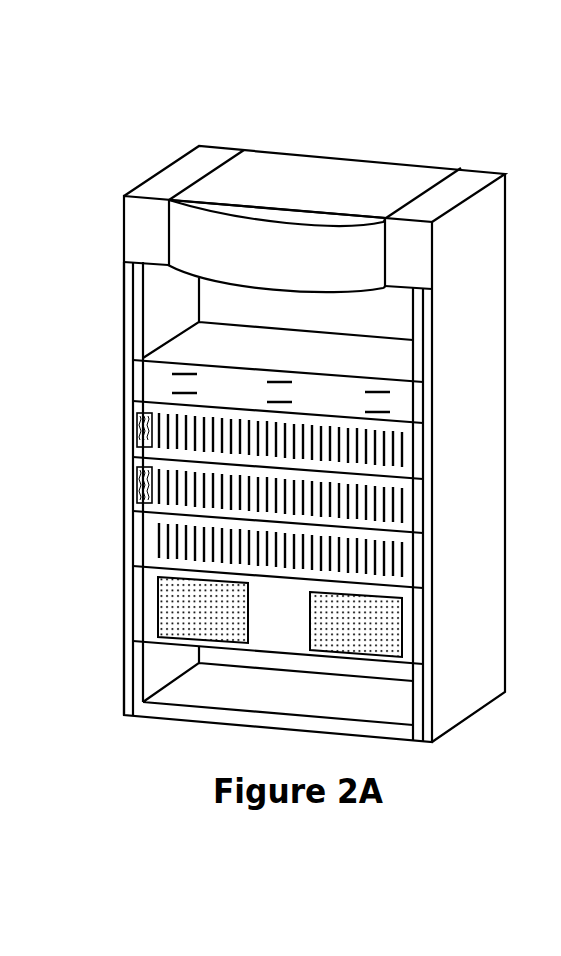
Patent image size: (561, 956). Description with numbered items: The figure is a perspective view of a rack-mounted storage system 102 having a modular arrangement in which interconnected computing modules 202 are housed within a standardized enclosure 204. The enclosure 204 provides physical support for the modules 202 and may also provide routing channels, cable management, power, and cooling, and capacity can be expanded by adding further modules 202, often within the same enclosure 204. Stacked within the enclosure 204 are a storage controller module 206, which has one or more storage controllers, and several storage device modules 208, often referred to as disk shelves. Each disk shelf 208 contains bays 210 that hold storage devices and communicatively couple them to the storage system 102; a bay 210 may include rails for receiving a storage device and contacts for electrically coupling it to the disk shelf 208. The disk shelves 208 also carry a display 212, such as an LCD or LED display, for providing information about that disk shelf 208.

The storage system 102 is at (316, 117).
The computing modules 202 is at (88, 432).
The enclosure 204 is at (124, 318).
The storage controller module 206 is at (425, 402).
The storage device modules 208 is at (425, 448).
The bays 210 is at (157, 523).
The display 212 is at (137, 480).